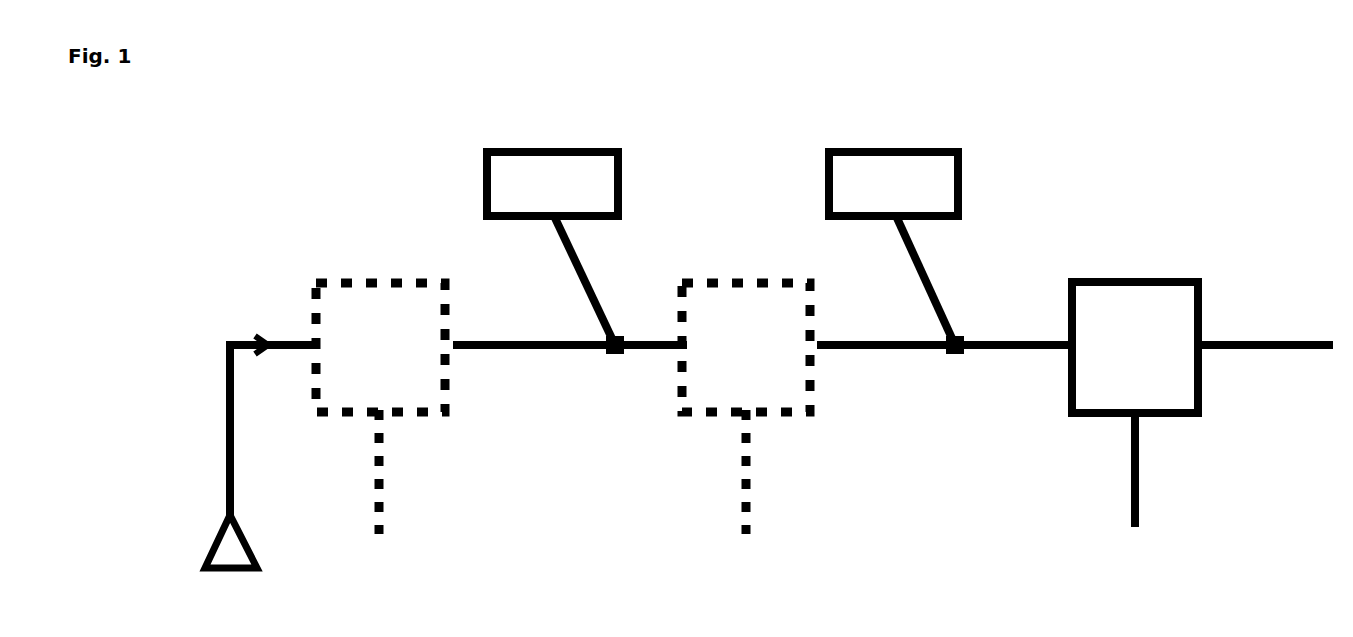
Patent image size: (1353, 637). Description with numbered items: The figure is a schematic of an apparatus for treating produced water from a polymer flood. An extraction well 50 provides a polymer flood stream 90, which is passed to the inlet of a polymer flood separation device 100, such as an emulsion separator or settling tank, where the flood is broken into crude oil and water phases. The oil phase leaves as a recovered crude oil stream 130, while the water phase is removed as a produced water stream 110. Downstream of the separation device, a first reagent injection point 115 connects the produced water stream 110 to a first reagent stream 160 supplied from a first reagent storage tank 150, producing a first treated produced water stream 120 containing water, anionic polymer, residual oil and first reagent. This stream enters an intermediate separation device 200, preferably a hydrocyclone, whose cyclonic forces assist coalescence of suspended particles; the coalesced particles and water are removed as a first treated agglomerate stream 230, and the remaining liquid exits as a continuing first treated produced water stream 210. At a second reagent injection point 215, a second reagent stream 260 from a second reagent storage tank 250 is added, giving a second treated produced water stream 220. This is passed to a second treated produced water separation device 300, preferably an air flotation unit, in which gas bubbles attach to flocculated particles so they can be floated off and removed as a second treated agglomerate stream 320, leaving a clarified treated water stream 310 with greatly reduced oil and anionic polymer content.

The extraction well 50 is at (247, 570).
The polymer flood stream 90 is at (240, 342).
The polymer flood separation device 100 is at (380, 347).
The produced water stream 110 is at (478, 350).
The first reagent injection point 115 is at (605, 337).
The first treated produced water stream 120 is at (653, 350).
The recovered crude oil stream 130 is at (379, 500).
The first reagent storage tank 150 is at (552, 184).
The first reagent stream 160 is at (577, 258).
The intermediate separation device 200 is at (746, 347).
The continuing first treated produced water stream 210 is at (838, 353).
The second reagent injection point 215 is at (947, 333).
The second treated produced water stream 220 is at (1037, 350).
The first treated agglomerate stream 230 is at (746, 500).
The second reagent storage tank 250 is at (893, 184).
The second reagent stream 260 is at (923, 270).
The second treated produced water separation device 300 is at (1135, 347).
The treated water stream 310 is at (1267, 342).
The second treated agglomerate stream 320 is at (1140, 490).